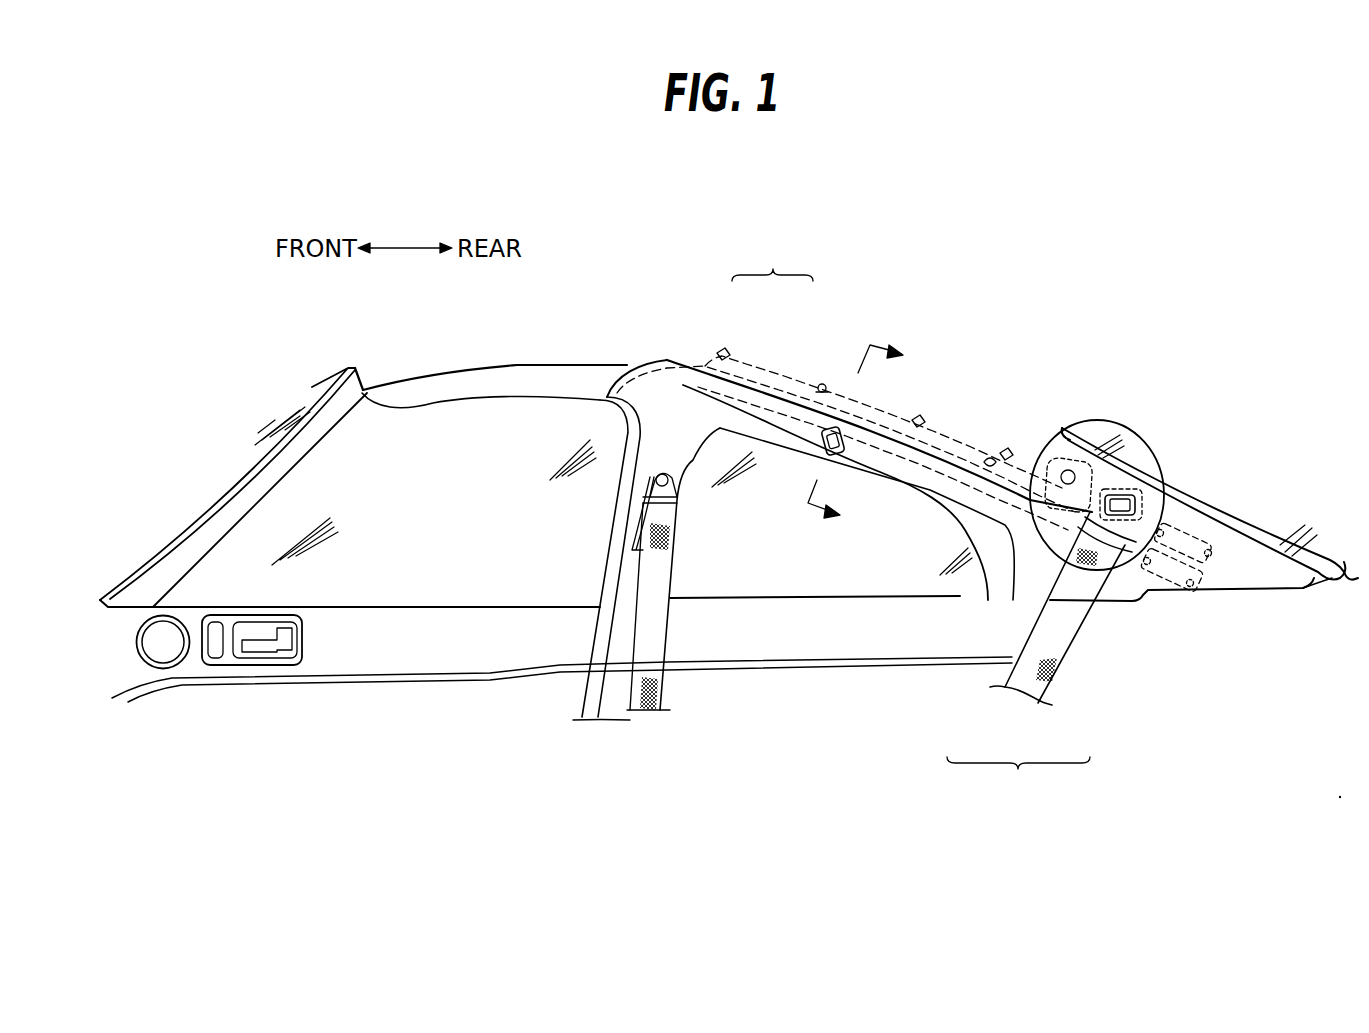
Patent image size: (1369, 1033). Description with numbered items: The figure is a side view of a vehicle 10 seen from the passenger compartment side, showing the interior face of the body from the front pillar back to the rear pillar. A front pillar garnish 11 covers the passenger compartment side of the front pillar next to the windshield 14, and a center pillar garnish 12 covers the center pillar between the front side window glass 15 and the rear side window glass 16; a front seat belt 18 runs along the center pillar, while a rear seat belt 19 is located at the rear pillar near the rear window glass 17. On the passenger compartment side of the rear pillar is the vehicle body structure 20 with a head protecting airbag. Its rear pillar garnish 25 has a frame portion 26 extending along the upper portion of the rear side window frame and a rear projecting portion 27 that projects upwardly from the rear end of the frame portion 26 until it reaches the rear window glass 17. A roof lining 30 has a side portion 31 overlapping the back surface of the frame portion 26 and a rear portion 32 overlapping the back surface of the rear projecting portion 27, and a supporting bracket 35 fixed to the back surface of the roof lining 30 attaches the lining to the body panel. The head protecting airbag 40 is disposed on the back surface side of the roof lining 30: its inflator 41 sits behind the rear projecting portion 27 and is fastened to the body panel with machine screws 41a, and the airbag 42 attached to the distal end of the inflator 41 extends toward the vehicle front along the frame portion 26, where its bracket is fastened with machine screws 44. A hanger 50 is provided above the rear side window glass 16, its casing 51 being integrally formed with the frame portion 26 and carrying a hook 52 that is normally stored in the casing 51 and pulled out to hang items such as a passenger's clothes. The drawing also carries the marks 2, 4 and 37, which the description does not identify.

The vehicle 10 is at (657, 265).
The front pillar garnish 11 is at (210, 523).
The center pillar garnish 12 is at (623, 612).
The windshield 14 is at (293, 398).
The front side window glass 15 is at (440, 565).
The rear side window glass 16 is at (740, 583).
The rear window glass 17 is at (1212, 493).
The front seat belt 18 is at (650, 657).
The rear seat belt 19 is at (1103, 583).
The vehicle body structure with a head protecting airbag 20 is at (1110, 303).
The enlarged portion 2 is at (1137, 430).
The section line 4 is at (852, 429).
The rear pillar garnish 25 is at (1018, 780).
The frame portion 26 is at (920, 487).
The rear projecting portion 27 is at (1072, 427).
The roof lining 30 is at (900, 407).
The side portion 31 is at (898, 450).
The rear portion 32 is at (1118, 497).
The supporting bracket 35 is at (1087, 485).
The bolt 37 is at (1062, 468).
The head protecting airbag 40 is at (965, 449).
The inflator 41 is at (1183, 545).
The machine screws 41a is at (1192, 590).
The airbag 42 is at (990, 455).
The machine screws 44 is at (823, 382).
The hanger 50 is at (772, 263).
The casing 51 is at (824, 440).
The hook 52 is at (815, 437).